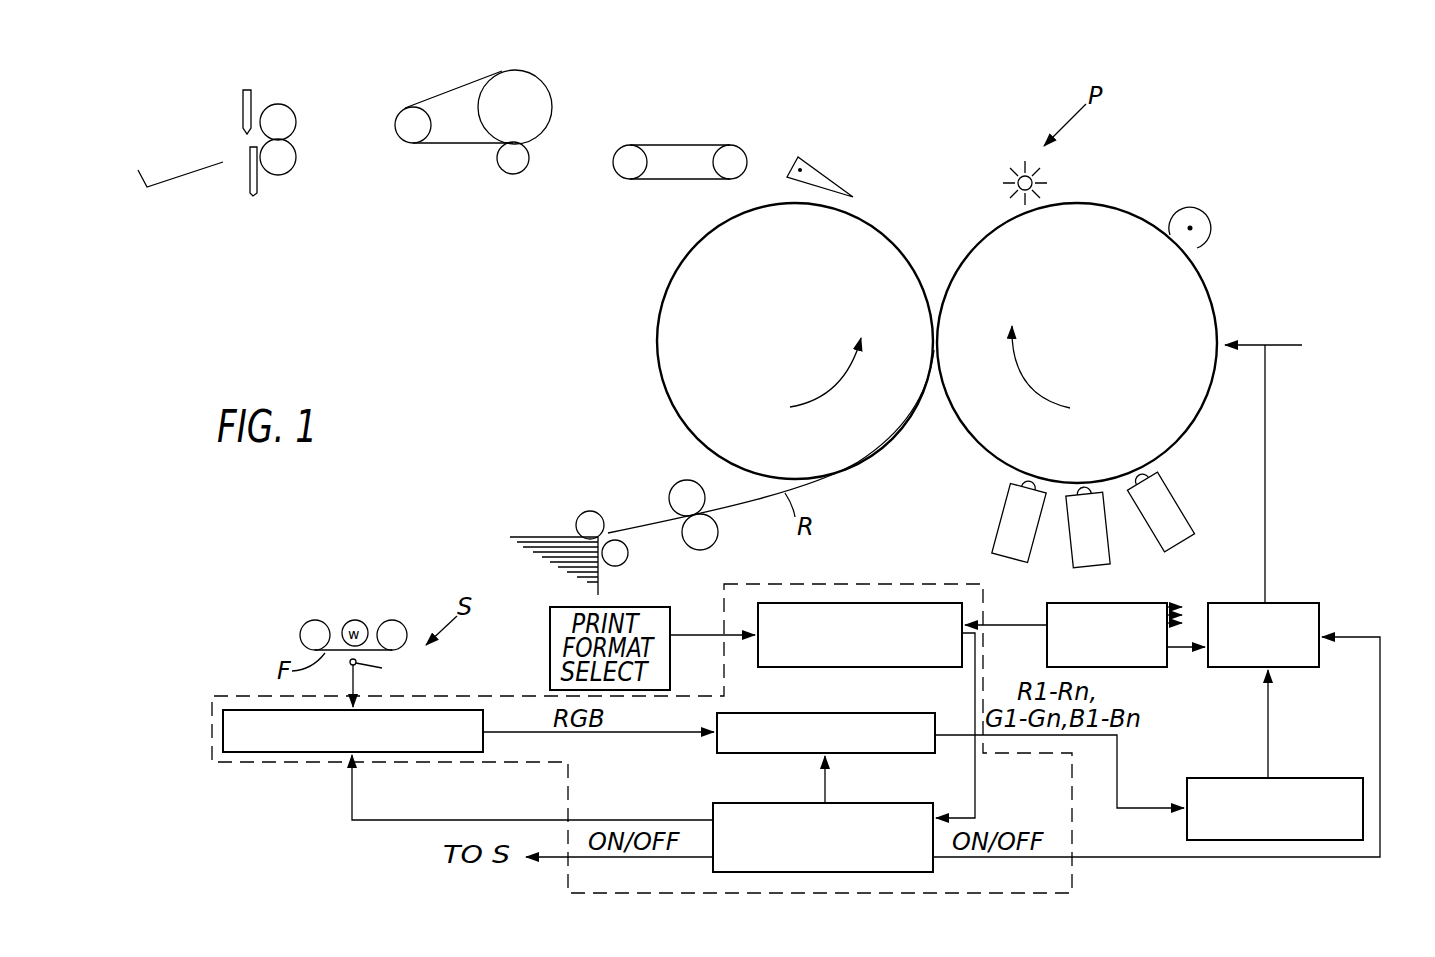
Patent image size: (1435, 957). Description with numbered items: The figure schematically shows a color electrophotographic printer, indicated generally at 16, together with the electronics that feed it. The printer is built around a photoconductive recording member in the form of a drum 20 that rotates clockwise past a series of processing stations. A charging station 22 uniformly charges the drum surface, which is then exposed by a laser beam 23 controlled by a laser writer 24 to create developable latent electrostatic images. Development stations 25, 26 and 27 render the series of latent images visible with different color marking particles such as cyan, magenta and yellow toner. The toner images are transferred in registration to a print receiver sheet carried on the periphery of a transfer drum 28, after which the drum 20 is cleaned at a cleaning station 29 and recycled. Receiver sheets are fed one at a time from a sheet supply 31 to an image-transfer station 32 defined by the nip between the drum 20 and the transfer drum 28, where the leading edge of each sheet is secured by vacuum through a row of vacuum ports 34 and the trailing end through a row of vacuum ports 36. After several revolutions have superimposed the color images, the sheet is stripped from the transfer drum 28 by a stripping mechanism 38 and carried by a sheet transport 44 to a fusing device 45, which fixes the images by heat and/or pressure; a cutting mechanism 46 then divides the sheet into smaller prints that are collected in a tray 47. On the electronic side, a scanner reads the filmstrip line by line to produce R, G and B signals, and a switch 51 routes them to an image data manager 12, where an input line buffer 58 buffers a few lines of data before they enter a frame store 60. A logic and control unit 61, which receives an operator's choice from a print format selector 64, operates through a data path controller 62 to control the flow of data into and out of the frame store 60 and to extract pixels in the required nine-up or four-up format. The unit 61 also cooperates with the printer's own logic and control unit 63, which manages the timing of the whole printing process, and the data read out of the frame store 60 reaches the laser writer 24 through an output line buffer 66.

The image data manager 12 is at (823, 578).
The color printer apparatus 16 is at (1352, 420).
The drum 20 is at (1122, 212).
The charging station 22 is at (1205, 218).
The laser beam 23 is at (1257, 344).
The laser writer 24 is at (1323, 620).
The development station 25 is at (1170, 500).
The development station 26 is at (1100, 547).
The development station 27 is at (1027, 535).
The transfer drum 28 is at (899, 228).
The cleaning station 29 is at (1022, 167).
The sheet supply 31 is at (533, 537).
The image-transfer station 32 is at (932, 400).
The vacuum ports 34 is at (883, 437).
The vacuum ports 36 is at (693, 257).
The stripping mechanism 38 is at (818, 167).
The sheet transport 44 is at (690, 145).
The fusing device 45 is at (572, 96).
The cutting mechanism 46 is at (296, 101).
The tray 47 is at (167, 160).
The switch 51 is at (387, 669).
The input line buffer 58 is at (263, 752).
The frame store 60 is at (735, 755).
The logic and control unit 61 is at (968, 610).
The data path controller 62 is at (877, 803).
The logic and control unit 63 is at (1142, 603).
The print format selector 64 is at (652, 605).
The output line buffer 66 is at (1305, 778).